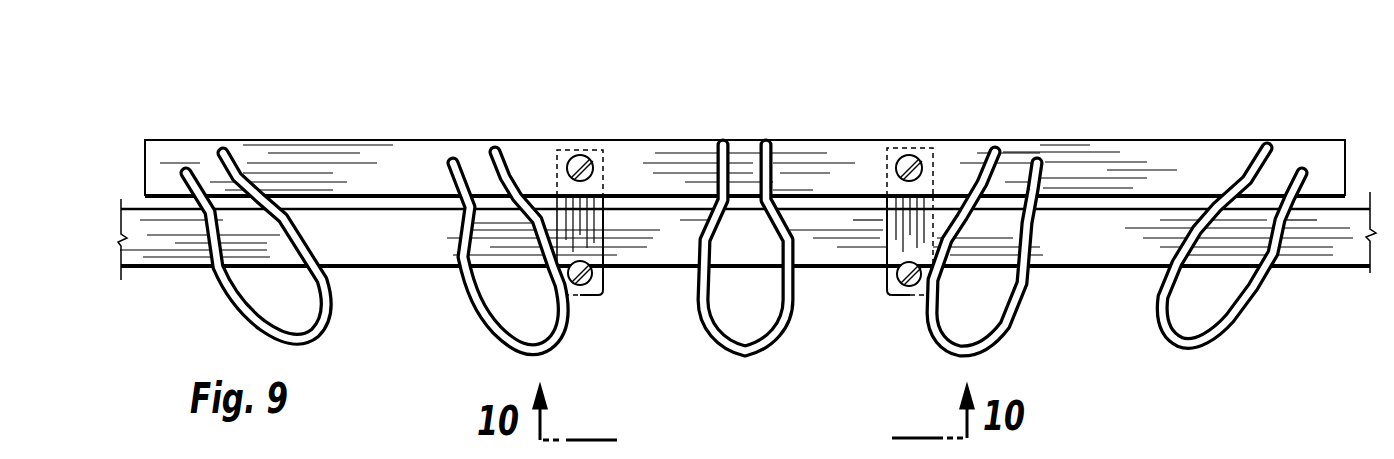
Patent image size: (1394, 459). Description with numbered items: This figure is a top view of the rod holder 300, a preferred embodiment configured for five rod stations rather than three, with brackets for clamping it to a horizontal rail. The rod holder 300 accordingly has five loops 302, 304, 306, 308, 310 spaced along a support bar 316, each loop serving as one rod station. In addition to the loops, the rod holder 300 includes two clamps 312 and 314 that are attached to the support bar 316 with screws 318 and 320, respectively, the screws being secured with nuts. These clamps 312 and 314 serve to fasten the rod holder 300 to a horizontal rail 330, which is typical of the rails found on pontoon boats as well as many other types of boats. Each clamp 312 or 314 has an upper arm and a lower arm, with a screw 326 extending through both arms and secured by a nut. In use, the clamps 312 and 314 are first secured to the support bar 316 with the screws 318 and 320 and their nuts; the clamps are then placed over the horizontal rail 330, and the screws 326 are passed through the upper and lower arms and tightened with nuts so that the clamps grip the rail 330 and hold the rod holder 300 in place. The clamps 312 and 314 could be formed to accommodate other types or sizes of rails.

The rod holder 300 is at (778, 124).
The loop 302 is at (318, 327).
The loop 304 is at (548, 353).
The loop 306 is at (763, 347).
The loop 308 is at (1003, 340).
The loop 310 is at (1213, 338).
The clamp 312 is at (597, 297).
The clamp 314 is at (893, 290).
The support bar 316 is at (407, 150).
The screw 318 is at (589, 158).
The screw 320 is at (919, 158).
The screw 326 is at (590, 277).
The horizontal rail 330 is at (163, 257).